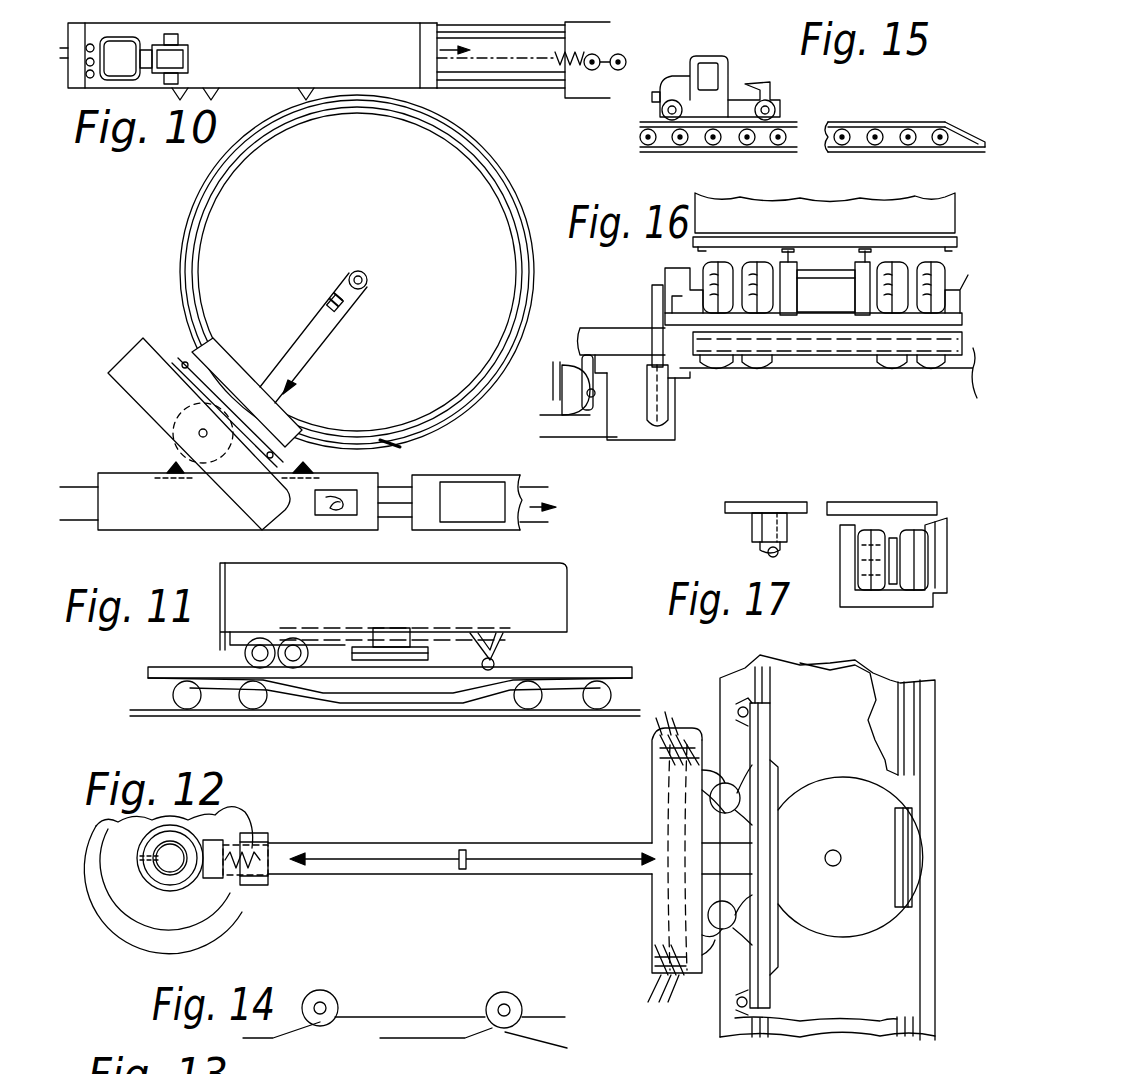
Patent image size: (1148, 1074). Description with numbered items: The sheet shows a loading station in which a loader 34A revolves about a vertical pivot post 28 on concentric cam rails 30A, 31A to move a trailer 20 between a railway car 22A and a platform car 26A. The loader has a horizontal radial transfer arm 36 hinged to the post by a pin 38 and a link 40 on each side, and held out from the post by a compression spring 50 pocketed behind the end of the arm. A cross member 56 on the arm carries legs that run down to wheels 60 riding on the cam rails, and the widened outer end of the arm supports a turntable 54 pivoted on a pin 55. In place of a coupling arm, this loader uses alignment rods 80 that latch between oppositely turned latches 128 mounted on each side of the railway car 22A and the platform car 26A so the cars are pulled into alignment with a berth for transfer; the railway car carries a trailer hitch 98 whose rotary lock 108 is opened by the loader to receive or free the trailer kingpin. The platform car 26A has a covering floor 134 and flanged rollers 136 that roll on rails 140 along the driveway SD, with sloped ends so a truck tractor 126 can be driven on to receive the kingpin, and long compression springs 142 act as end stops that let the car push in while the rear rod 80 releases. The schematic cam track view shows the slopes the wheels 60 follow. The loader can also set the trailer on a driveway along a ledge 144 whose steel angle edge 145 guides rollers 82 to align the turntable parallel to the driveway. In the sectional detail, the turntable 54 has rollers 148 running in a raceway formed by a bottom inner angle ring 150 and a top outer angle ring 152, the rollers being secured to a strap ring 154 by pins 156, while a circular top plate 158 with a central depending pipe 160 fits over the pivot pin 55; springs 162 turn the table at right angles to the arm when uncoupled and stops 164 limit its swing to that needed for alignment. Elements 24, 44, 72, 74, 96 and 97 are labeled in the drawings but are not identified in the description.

In FIG. 10, the trailer 20 is at (122, 355).
In FIG. 16, the trailer 20 is at (942, 226).
In FIG. 11, the trailer 20 is at (567, 605).
In FIG. 10, the railway car 22A is at (140, 470).
In FIG. 11, the railway car 22A is at (185, 650).
In FIG. 10, the adjacent car 24 is at (460, 475).
In FIG. 10, the platform car 26A is at (255, 40).
In FIG. 15, the platform car 26A is at (898, 122).
In FIG. 12, the platform car 26A is at (935, 757).
In FIG. 10, the vertical pivot post 28 is at (366, 275).
In FIG. 12, the vertical pivot post 28 is at (168, 877).
In FIG. 10, the circular rail 30A is at (200, 240).
In FIG. 12, the circular rail 30A is at (675, 1005).
In FIG. 10, the circular rail inner track 31A is at (195, 268).
In FIG. 12, the circular rail inner track 31A is at (660, 988).
In FIG. 10, the loader 34A is at (294, 375).
In FIG. 11, the loader 34A is at (422, 658).
In FIG. 12, the loader 34A is at (408, 843).
In FIG. 10, the horizontal radial transfer arm 36 is at (312, 332).
In FIG. 16, the horizontal radial transfer arm 36 is at (596, 332).
In FIG. 12, the horizontal radial transfer arm 36 is at (400, 876).
In FIG. 12, the hinge pin 38 is at (258, 880).
In FIG. 12, the link 40 is at (270, 846).
In FIG. 12, the plate 44 is at (205, 823).
In FIG. 12, the compression spring 50 is at (232, 880).
In FIG. 11, the turntable 54 is at (375, 660).
In FIG. 12, the turntable 54 is at (860, 934).
In FIG. 17, the pivot pin 55 is at (779, 548).
In FIG. 12, the pivot pin 55 is at (840, 866).
In FIG. 12, the cross member 56 is at (652, 826).
In FIG. 16, the wheel 60 is at (566, 376).
In FIG. 12, the wheel 60 is at (644, 775).
In FIG. 14, the wheel 60 is at (330, 992).
In FIG. 12, the bracket 72 is at (908, 842).
In FIG. 12, the vertical bar 74 is at (775, 968).
In FIG. 10, the alignment rod 80 is at (182, 360).
In FIG. 16, the alignment rod 80 is at (657, 285).
In FIG. 12, the alignment rod 80 is at (743, 712).
In FIG. 16, the roller 82 is at (672, 415).
In FIG. 10, the roller support 96 is at (297, 115).
In FIG. 16, the roller support 96 is at (592, 418).
In FIG. 14, the roller support 96 is at (345, 1014).
In FIG. 10, the rail segment 97 is at (398, 440).
In FIG. 10, the trailer hitch 98 is at (290, 110).
In FIG. 16, the trailer hitch 98 is at (596, 396).
In FIG. 14, the trailer hitch 98 is at (335, 1026).
In FIG. 10, the rotary lock 108 is at (232, 505).
In FIG. 10, the truck tractor 126 is at (122, 40).
In FIG. 15, the truck tractor 126 is at (704, 60).
In FIG. 12, the latch 128 is at (758, 705).
In FIG. 15, the covering floor 134 is at (790, 120).
In FIG. 15, the flanged roller 136 is at (760, 148).
In FIG. 12, the rail 140 is at (757, 666).
In FIG. 10, the long compression spring 142 is at (585, 52).
In FIG. 16, the ledge 144 is at (665, 448).
In FIG. 16, the steel angle edge 145 is at (680, 380).
In FIG. 17, the roller 148 is at (880, 592).
In FIG. 17, the bottom inner angle ring 150 is at (842, 598).
In FIG. 17, the top outer angle ring 152 is at (947, 535).
In FIG. 17, the strap ring 154 is at (905, 545).
In FIG. 17, the pin or bolt 156 is at (918, 598).
In FIG. 17, the circular top plate 158 is at (880, 506).
In FIG. 17, the central depending pipe 160 is at (752, 532).
In FIG. 12, the spring 162 is at (660, 778).
In FIG. 12, the stop 164 is at (660, 742).